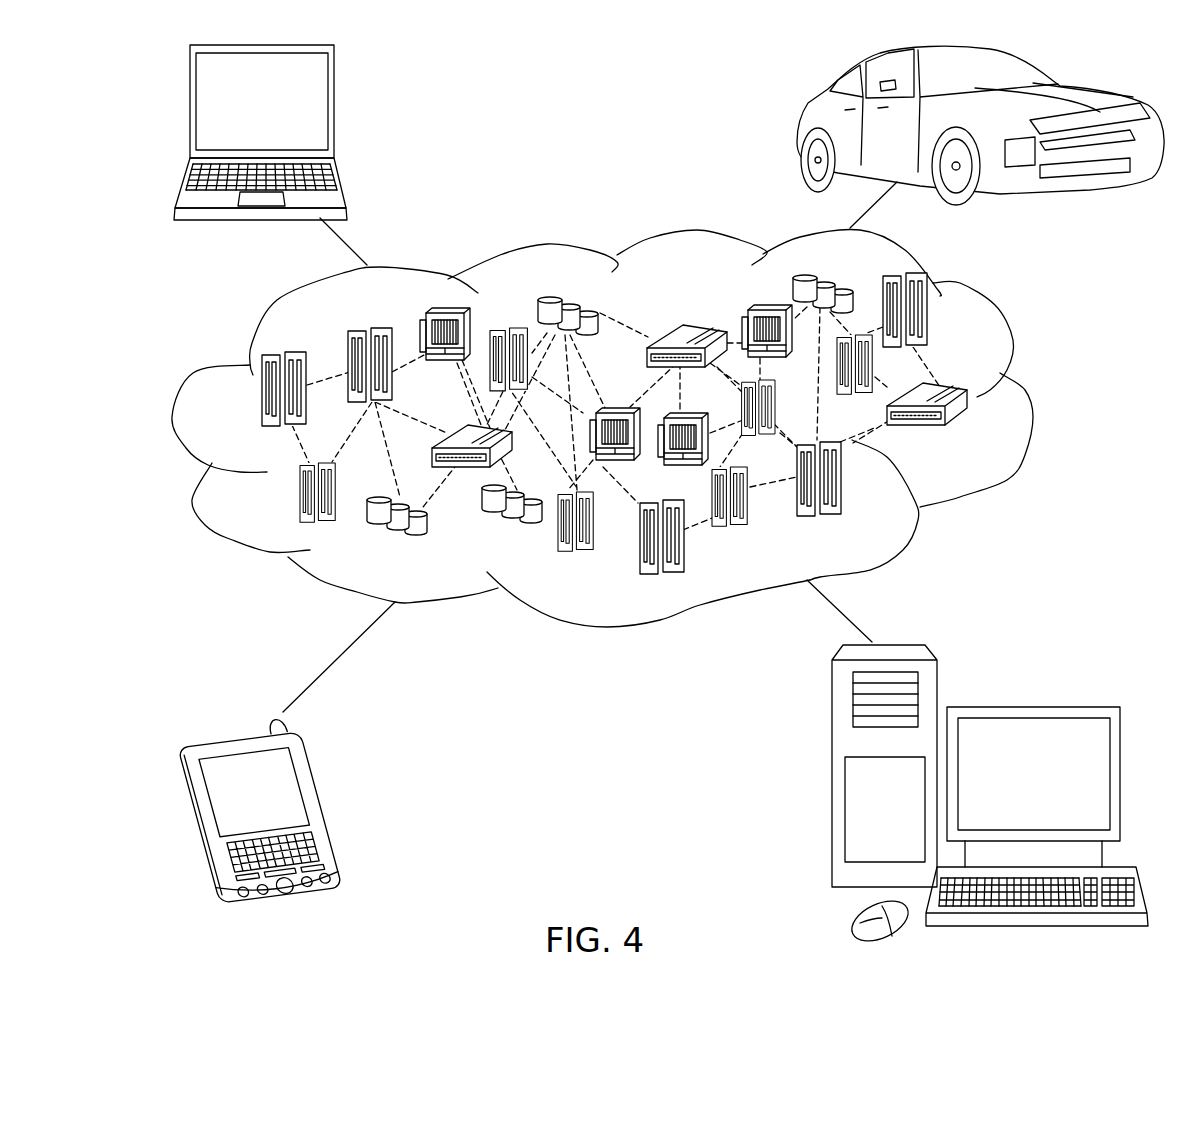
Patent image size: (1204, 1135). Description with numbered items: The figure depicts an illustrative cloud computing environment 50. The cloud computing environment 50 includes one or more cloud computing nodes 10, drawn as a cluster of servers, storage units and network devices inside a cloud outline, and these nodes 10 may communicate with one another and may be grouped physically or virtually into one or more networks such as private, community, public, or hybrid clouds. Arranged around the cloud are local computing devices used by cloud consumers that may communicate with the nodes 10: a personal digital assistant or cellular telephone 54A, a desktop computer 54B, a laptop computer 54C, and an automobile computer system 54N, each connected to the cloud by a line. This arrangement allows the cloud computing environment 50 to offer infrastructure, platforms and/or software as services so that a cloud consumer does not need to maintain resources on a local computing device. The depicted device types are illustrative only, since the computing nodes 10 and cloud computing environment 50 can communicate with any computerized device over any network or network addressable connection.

The cloud computing node 10 is at (976, 433).
The cloud computing environment 50 is at (1033, 402).
The personal digital assistant (PDA) or cellular telephone 54A is at (325, 808).
The desktop computer 54B is at (1030, 707).
The laptop computer 54C is at (335, 110).
The automobile computer system 54N is at (798, 128).